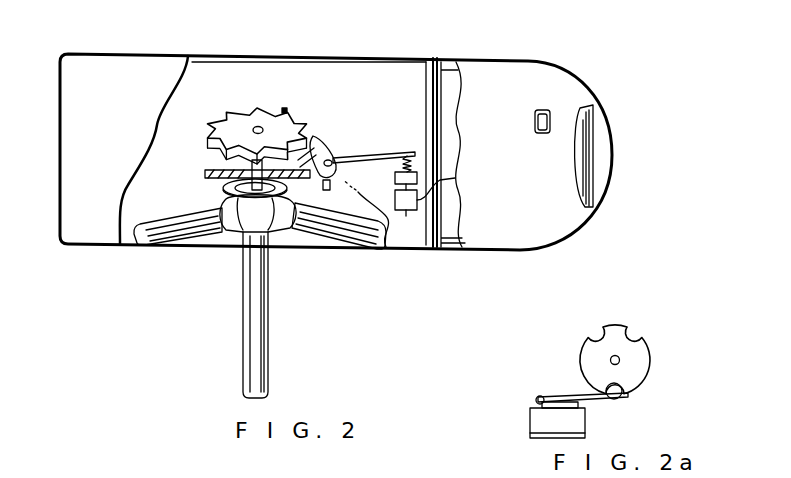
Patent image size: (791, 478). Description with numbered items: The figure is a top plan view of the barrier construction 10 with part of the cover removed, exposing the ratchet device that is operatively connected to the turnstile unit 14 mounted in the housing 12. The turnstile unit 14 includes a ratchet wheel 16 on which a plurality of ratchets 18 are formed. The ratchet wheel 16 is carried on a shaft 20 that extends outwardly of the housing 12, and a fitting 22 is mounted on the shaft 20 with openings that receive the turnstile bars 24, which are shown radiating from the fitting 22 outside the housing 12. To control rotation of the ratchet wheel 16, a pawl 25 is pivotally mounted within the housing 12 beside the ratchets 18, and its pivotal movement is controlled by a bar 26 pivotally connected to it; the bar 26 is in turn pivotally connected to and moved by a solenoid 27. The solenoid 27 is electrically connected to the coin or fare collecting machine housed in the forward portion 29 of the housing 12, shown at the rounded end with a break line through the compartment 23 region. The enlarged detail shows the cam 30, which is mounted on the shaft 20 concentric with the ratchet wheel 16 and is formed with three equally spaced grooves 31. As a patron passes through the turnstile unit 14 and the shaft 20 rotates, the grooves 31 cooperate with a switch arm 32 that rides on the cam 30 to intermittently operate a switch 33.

In FIG. 2, the barrier construction 10 is at (399, 42).
In FIG. 2, the housing 12 is at (165, 62).
In FIG. 2, the turnstile unit 14 is at (342, 108).
In FIG. 2, the ratchet wheel 16 is at (233, 118).
In FIG. 2, the ratchets 18 is at (283, 108).
In FIG. 2, the shaft 20 is at (259, 127).
In FIG. 2a, the shaft 20 is at (620, 361).
In FIG. 2, the fitting 22 is at (247, 228).
In FIG. 2, the battery compartment 23 is at (455, 80).
In FIG. 2, the turnstile bars 24 is at (168, 248).
In FIG. 2, the pawl 25 is at (326, 146).
In FIG. 2, the bar 26 is at (374, 159).
In FIG. 2, the solenoid 27 is at (425, 203).
In FIG. 2, the forward portion of the housing 29 is at (484, 250).
In FIG. 2, the cam 30 is at (287, 188).
In FIG. 2a, the cam 30 is at (618, 330).
In FIG. 2, the grooves 31 is at (232, 188).
In FIG. 2a, the grooves 31 is at (584, 343).
In FIG. 2a, the switch arm 32 is at (596, 404).
In FIG. 2a, the switch 33 is at (540, 422).